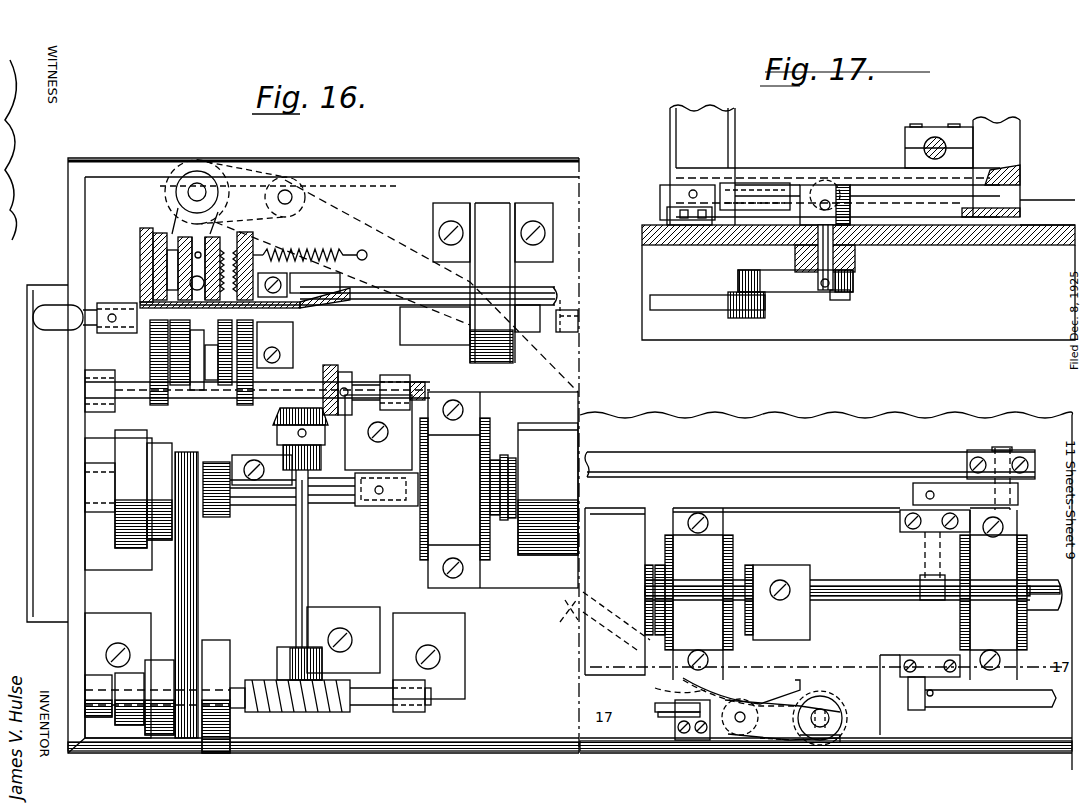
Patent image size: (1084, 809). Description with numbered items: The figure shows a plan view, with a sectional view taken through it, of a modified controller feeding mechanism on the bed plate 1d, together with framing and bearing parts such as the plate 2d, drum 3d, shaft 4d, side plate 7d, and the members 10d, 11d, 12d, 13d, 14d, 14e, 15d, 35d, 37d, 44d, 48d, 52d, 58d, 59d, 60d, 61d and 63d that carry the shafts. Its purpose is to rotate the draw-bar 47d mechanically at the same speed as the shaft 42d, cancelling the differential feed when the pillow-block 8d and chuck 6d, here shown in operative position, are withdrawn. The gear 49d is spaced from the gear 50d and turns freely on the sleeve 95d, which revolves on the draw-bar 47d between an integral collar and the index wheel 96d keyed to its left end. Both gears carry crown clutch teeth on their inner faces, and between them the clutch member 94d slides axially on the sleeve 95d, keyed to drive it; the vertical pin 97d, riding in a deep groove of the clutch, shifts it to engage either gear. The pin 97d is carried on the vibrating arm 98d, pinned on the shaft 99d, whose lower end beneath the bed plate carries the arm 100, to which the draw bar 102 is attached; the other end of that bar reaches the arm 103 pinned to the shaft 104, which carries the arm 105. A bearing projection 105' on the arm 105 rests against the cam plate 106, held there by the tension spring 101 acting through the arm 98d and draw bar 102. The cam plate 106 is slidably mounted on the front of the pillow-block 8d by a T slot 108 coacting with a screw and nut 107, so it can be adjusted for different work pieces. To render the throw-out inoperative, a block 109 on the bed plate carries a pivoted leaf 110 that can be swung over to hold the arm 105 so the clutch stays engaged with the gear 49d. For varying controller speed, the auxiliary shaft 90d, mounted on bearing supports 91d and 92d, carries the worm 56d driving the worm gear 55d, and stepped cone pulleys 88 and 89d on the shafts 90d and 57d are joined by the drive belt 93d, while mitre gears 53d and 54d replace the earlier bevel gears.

In FIG. 16, the bed plate 1d is at (540, 783).
In FIG. 17, the bed plate 1d is at (1065, 305).
In FIG. 16, the bracket plate 2d is at (560, 580).
In FIG. 16, the drum 3d is at (548, 489).
In FIG. 16, the shaft 4d is at (415, 505).
In FIG. 17, the chuck 6d is at (615, 591).
In FIG. 16, the side plate 7d is at (30, 316).
In FIG. 17, the pillow-block 8d is at (752, 170).
In FIG. 17, the arm 10d is at (1040, 700).
In FIG. 17, the post 11d is at (1000, 158).
In FIG. 17, the bracket 12d is at (910, 690).
In FIG. 17, the bearing block 13d is at (935, 127).
In FIG. 17, the clamp plate 14d is at (940, 505).
In FIG. 17, the clamp block 14e is at (1010, 455).
In FIG. 17, the bar 15d is at (840, 438).
In FIG. 16, the bearing 35d is at (448, 340).
In FIG. 16, the bearing bracket 37d is at (493, 283).
In FIG. 16, the shaft 42d is at (412, 300).
In FIG. 16, the shaft 44d is at (300, 362).
In FIG. 16, the draw-bar 47d is at (570, 318).
In FIG. 16, the handle 48d is at (100, 333).
In FIG. 16, the gear 49d is at (150, 228).
In FIG. 16, the gear 50d is at (300, 252).
In FIG. 16, the gears 52d is at (222, 388).
In FIG. 16, the mitre gear 53d is at (350, 378).
In FIG. 16, the mitre gear 54d is at (325, 432).
In FIG. 16, the worm gear 55d is at (340, 712).
In FIG. 16, the worm 56d is at (335, 685).
In FIG. 16, the shaft 57d is at (357, 505).
In FIG. 16, the collar 58d is at (95, 500).
In FIG. 16, the vertical shaft 59d is at (296, 578).
In FIG. 16, the bearing plate 60d is at (372, 612).
In FIG. 16, the shaft 61d is at (270, 503).
In FIG. 16, the bearing plate 63d is at (412, 450).
In FIG. 16, the stepped cone belt pulley 88 is at (128, 500).
In FIG. 16, the stepped cone belt pulley 89d is at (225, 640).
In FIG. 16, the auxiliary shaft 90d is at (428, 705).
In FIG. 16, the bearing support 91d is at (452, 635).
In FIG. 16, the bearing support 92d is at (108, 622).
In FIG. 16, the drive belt 93d is at (198, 575).
In FIG. 16, the clutch member 94d is at (222, 237).
In FIG. 16, the sleeve 95d is at (325, 306).
In FIG. 16, the index wheel 96d is at (153, 255).
In FIG. 16, the pin 97d is at (192, 283).
In FIG. 16, the vibrating arm 98d is at (175, 215).
In FIG. 16, the shaft 99d is at (200, 185).
In FIG. 16, the arm 100 is at (283, 176).
In FIG. 16, the tension spring 101 is at (322, 250).
In FIG. 16, the draw bar 102 is at (385, 233).
In FIG. 17, the draw bar 102 is at (690, 305).
In FIG. 17, the arm 103 is at (785, 288).
In FIG. 17, the shaft 104 is at (840, 258).
In FIG. 17, the arm 105 is at (814, 473).
In FIG. 17, the bearing projection 105' is at (781, 688).
In FIG. 17, the cam plate 106 is at (712, 180).
In FIG. 17, the screw and nut 107 is at (840, 183).
In FIG. 17, the T slot 108 is at (1018, 186).
In FIG. 17, the block 109 is at (703, 222).
In FIG. 17, the leaf 110 is at (662, 192).